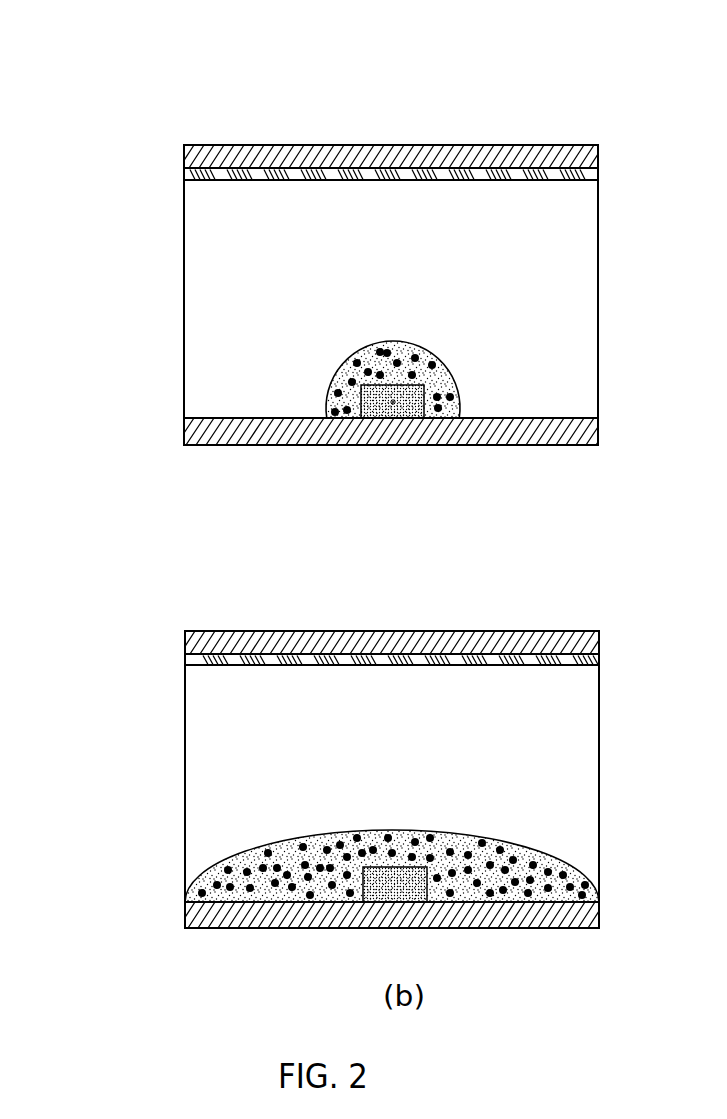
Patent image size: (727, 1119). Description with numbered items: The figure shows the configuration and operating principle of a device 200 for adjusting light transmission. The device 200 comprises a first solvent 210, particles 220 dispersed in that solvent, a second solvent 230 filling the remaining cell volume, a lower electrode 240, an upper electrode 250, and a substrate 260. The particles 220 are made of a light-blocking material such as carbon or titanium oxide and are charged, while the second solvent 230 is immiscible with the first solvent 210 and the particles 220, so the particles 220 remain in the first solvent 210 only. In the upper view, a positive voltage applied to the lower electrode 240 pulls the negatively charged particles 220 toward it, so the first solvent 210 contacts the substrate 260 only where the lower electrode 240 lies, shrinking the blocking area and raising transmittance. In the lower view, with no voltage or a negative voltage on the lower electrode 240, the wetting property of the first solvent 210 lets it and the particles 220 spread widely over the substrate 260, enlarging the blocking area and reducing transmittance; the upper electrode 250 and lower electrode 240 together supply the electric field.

The device for adjusting light transmission 200 is at (128, 43).
The first solvent 210 is at (360, 348).
The particles 220 is at (333, 378).
The second solvent 230 is at (227, 238).
The lower electrode 240 is at (197, 399).
The upper electrode 250 is at (184, 181).
The substrate 260 is at (186, 158).